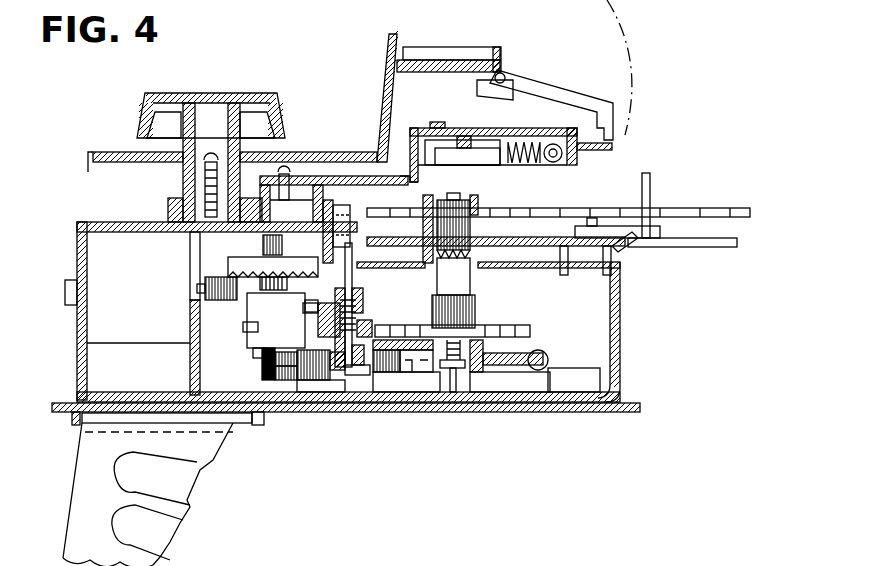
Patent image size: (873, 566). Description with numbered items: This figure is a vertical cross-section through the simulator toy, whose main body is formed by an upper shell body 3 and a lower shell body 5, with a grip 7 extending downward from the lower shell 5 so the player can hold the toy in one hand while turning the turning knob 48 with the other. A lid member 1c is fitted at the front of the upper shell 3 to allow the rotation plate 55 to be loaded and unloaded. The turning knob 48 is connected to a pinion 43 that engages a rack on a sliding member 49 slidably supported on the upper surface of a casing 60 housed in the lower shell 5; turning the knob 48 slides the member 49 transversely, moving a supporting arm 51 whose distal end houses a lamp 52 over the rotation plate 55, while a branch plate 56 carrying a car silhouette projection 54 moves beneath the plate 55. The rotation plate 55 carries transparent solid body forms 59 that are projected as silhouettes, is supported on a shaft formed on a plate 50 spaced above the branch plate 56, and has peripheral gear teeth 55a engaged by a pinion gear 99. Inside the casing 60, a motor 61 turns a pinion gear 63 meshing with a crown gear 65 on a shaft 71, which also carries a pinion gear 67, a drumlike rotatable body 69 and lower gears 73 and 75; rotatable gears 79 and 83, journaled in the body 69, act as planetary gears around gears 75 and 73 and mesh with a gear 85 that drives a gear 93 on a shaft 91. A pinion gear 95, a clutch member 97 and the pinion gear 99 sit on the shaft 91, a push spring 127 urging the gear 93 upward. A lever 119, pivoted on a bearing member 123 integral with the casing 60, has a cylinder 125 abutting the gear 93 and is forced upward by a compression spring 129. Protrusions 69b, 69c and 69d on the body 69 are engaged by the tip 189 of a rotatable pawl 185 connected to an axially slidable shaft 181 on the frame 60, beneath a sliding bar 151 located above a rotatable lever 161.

The lid member 1c is at (553, 84).
The upper shell body 3 is at (115, 152).
The lower shell body 5 is at (615, 400).
The grip 7 is at (95, 465).
The pinion 43 is at (170, 200).
The turning knob 48 is at (152, 93).
The sliding member 49 is at (307, 183).
The plate 50 is at (702, 247).
The supporting arm 51 is at (412, 130).
The lamp 52 is at (556, 163).
The car silhouette projection 54 is at (630, 247).
The rotation plate 55 is at (668, 208).
The gear teeth 55a is at (690, 208).
The branch plate 56 is at (588, 258).
The solid body forms 59 is at (647, 173).
The casing 60 is at (82, 222).
The motor 61 is at (97, 332).
The pinion gear 63 is at (212, 292).
The crown gear 65 is at (228, 265).
The pinion gear 67 is at (263, 243).
The rotatable body 69 is at (243, 327).
The protrusion 69b is at (305, 318).
The protrusion 69c is at (250, 298).
The protrusion 69d is at (250, 360).
The shaft 71 is at (300, 380).
The gear 73 is at (266, 378).
The gear 75 is at (278, 382).
The rotatable gear 79 is at (318, 380).
The rotatable gear 83 is at (258, 358).
The gear 85 is at (392, 372).
The shaft 91 is at (454, 392).
The gear 93 is at (545, 330).
The pinion gear 95 is at (475, 318).
The clutch member 97 is at (460, 282).
The pinion gear 99 is at (465, 215).
The lever 119 is at (528, 392).
The bearing member 123 is at (548, 370).
The cylinder 125 is at (490, 392).
The push spring 127 is at (477, 392).
The compression spring 129 is at (437, 385).
The sliding bar 151 is at (335, 213).
The rotatable lever 161 is at (330, 380).
The shaft 181 is at (358, 375).
The rotatable pawl 185 is at (345, 318).
The tip 189 is at (345, 270).